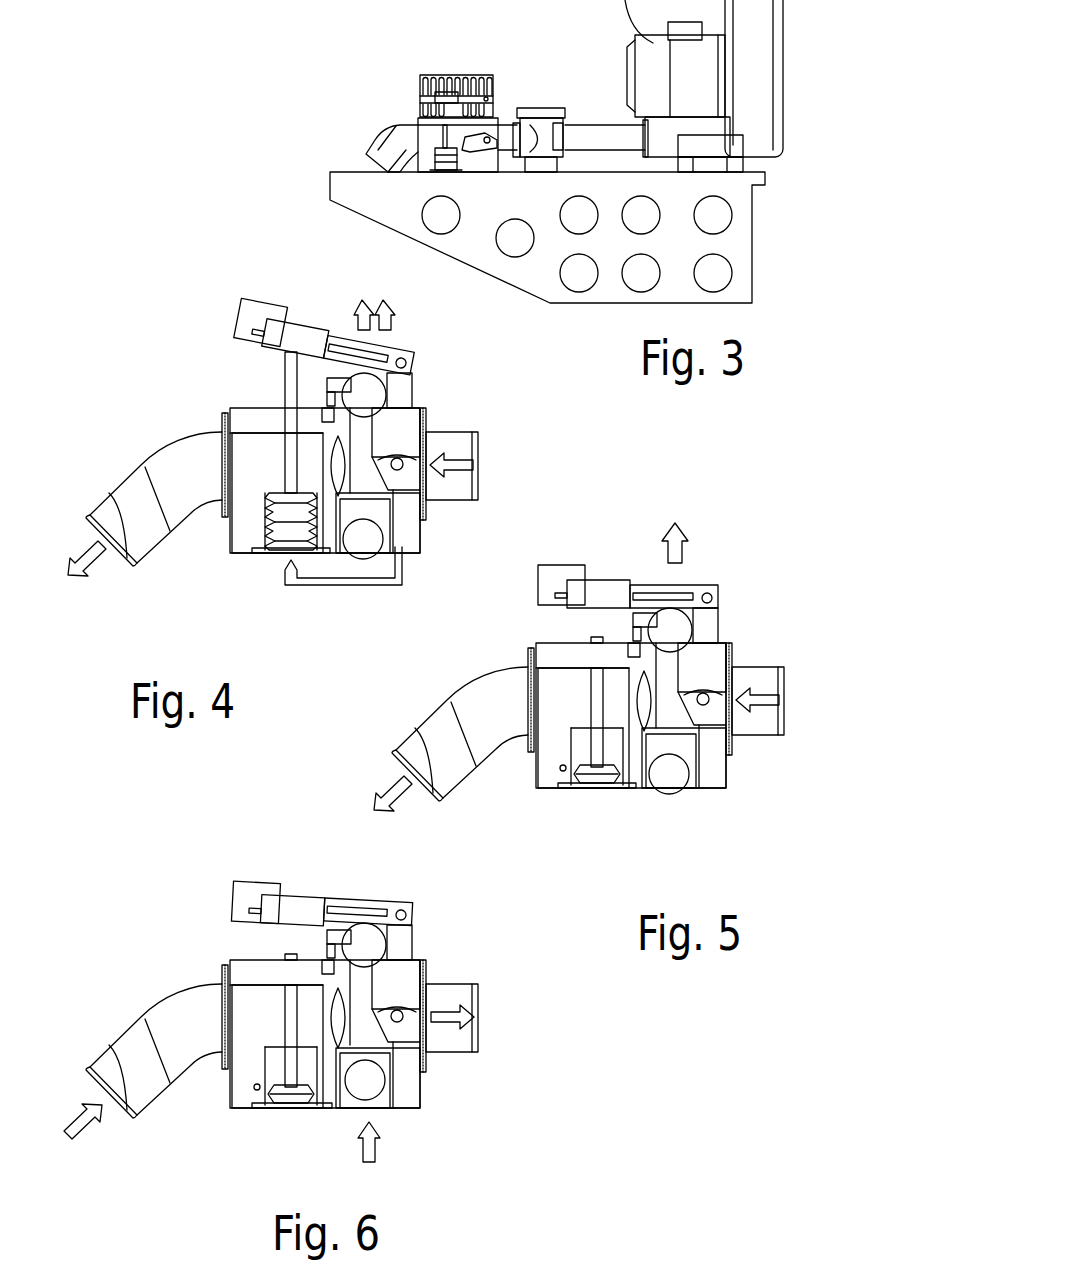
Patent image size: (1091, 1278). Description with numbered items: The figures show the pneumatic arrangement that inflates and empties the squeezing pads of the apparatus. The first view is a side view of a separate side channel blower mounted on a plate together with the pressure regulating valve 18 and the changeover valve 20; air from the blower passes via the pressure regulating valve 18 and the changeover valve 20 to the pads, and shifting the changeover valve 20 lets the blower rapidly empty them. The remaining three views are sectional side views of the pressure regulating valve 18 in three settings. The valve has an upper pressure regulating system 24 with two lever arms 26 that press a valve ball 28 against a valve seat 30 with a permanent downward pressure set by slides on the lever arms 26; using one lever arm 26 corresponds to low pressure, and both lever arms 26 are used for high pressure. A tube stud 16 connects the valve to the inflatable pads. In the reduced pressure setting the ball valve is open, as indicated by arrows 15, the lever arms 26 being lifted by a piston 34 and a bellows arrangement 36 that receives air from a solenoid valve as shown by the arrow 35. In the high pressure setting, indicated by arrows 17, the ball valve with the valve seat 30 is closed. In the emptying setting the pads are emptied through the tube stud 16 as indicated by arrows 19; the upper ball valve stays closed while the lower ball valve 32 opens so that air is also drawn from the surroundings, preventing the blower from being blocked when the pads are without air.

In FIG. 4, the arrows 15 is at (472, 476).
In FIG. 4, the tube stud 16 is at (143, 499).
In FIG. 5, the tube stud 16 is at (447, 734).
In FIG. 6, the tube stud 16 is at (146, 1051).
In FIG. 5, the arrows 17 is at (791, 695).
In FIG. 3, the pressure regulating valve 18 is at (452, 82).
In FIG. 4, the pressure regulating valve 18 is at (315, 507).
In FIG. 5, the pressure regulating valve 18 is at (615, 737).
In FIG. 6, the pressure regulating valve 18 is at (314, 1056).
In FIG. 6, the arrows 19 is at (477, 1020).
In FIG. 3, the changeover valve 20 is at (543, 108).
In FIG. 4, the upper pressure regulating system 24 is at (449, 431).
In FIG. 5, the upper pressure regulating system 24 is at (745, 649).
In FIG. 6, the upper pressure regulating system 24 is at (446, 983).
In FIG. 4, the lever arms 26 is at (325, 310).
In FIG. 5, the lever arms 26 is at (628, 543).
In FIG. 6, the lever arms 26 is at (322, 877).
In FIG. 4, the valve ball 28 is at (417, 378).
In FIG. 5, the valve ball 28 is at (689, 590).
In FIG. 6, the valve ball 28 is at (396, 912).
In FIG. 4, the valve seat 30 is at (280, 396).
In FIG. 5, the valve seat 30 is at (598, 634).
In FIG. 6, the valve seat 30 is at (331, 902).
In FIG. 4, the lower ball valve 32 is at (343, 593).
In FIG. 5, the lower ball valve 32 is at (677, 818).
In FIG. 6, the lower ball valve 32 is at (348, 1129).
In FIG. 4, the piston 34 is at (222, 420).
In FIG. 5, the piston 34 is at (525, 699).
In FIG. 6, the piston 34 is at (242, 1064).
In FIG. 4, the arrow 35 is at (343, 585).
In FIG. 4, the bellows arrangement 36 is at (279, 569).
In FIG. 5, the bellows arrangement 36 is at (584, 789).
In FIG. 6, the bellows arrangement 36 is at (292, 1122).